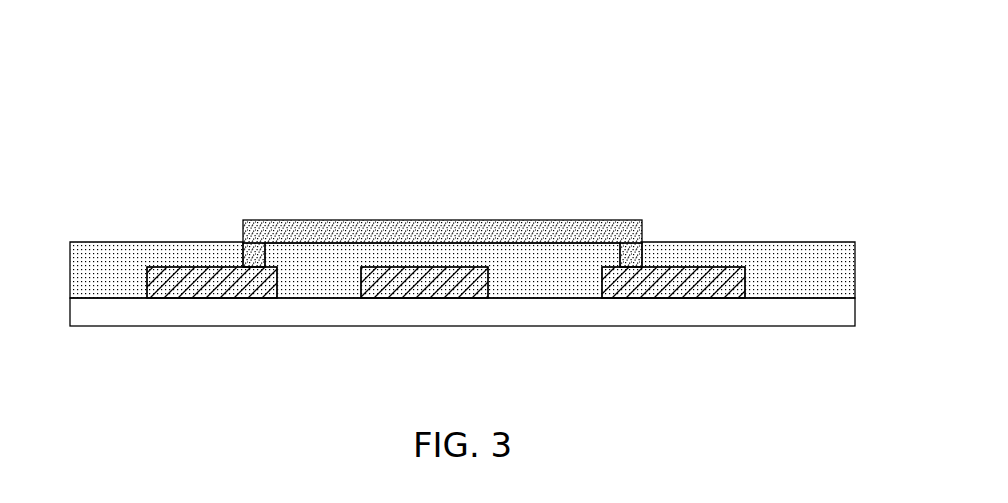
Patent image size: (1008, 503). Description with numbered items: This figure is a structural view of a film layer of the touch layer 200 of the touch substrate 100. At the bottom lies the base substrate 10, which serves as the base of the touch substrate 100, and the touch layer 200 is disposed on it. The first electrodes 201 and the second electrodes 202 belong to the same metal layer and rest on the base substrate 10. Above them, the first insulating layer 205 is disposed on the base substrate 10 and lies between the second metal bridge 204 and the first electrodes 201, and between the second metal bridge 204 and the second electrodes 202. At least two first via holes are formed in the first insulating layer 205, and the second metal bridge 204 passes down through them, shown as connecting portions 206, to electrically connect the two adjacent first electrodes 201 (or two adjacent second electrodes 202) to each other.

The touch substrate 100 is at (254, 131).
The base substrate 10 is at (835, 317).
The touch layer 200 is at (65, 243).
The first electrode 201 is at (682, 287).
The second electrode 202 is at (430, 280).
The second metal bridge 204 is at (412, 238).
The first insulating layer 205 is at (837, 270).
The via / connection portion 206 is at (632, 252).